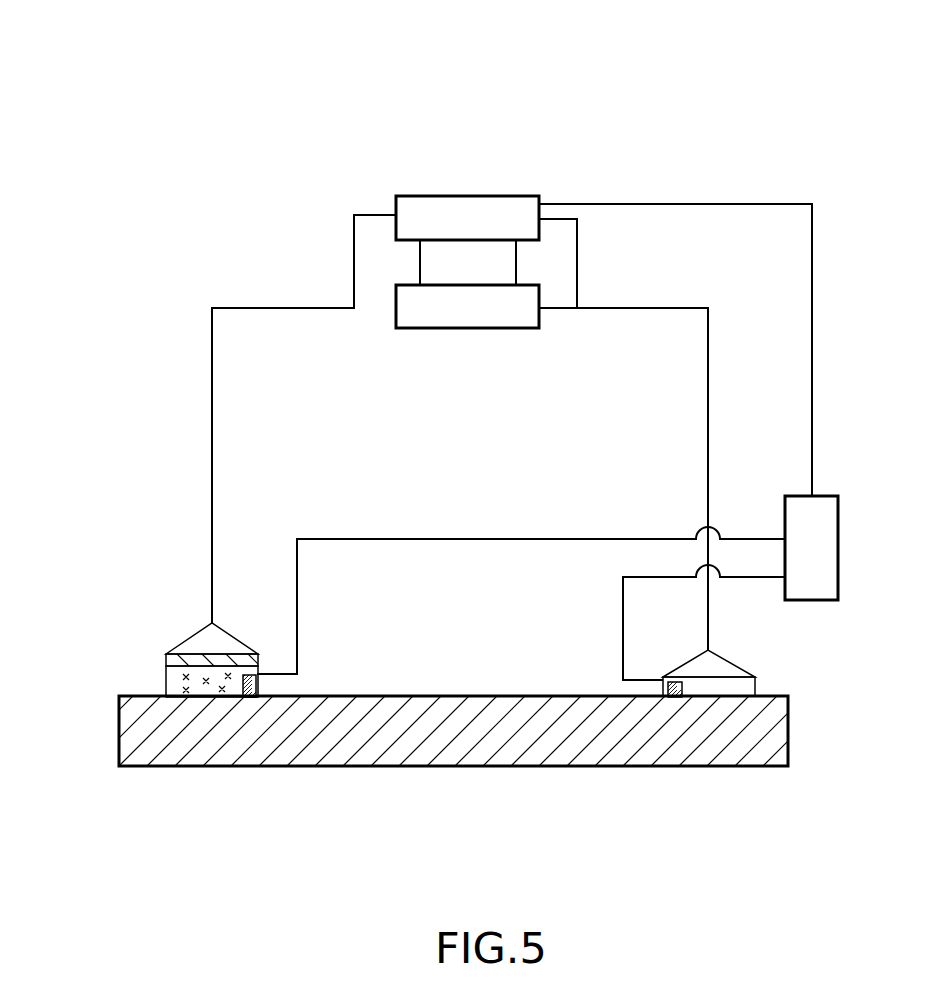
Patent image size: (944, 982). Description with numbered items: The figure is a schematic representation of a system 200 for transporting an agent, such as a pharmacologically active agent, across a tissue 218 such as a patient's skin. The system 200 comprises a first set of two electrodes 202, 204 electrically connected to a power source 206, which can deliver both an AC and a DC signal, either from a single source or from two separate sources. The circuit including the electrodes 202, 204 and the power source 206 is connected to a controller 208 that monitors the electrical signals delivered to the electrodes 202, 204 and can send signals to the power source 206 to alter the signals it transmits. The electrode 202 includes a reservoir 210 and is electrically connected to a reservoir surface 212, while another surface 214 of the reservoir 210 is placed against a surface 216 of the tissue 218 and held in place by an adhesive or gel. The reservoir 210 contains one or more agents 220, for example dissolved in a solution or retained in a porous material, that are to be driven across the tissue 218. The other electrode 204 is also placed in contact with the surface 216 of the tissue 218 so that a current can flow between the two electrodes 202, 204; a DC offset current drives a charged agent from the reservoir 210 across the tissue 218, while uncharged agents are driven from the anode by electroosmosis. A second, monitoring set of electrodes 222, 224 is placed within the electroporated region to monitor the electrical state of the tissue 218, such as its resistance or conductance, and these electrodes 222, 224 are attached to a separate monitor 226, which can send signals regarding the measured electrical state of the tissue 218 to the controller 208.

The system 200 is at (800, 126).
The first electrode 202 is at (233, 621).
The second electrode 204 is at (702, 672).
The power source 206 is at (475, 328).
The controller 208 is at (497, 196).
The reservoir 210 is at (166, 668).
The reservoir surface 212 is at (267, 653).
The other surface of the reservoir 214 is at (243, 697).
The tissue surface 216 is at (788, 697).
The tissue 218 is at (119, 715).
The agent 220 is at (180, 688).
The first monitoring electrode 222 is at (258, 681).
The second monitoring electrode 224 is at (662, 690).
The monitor 226 is at (839, 520).